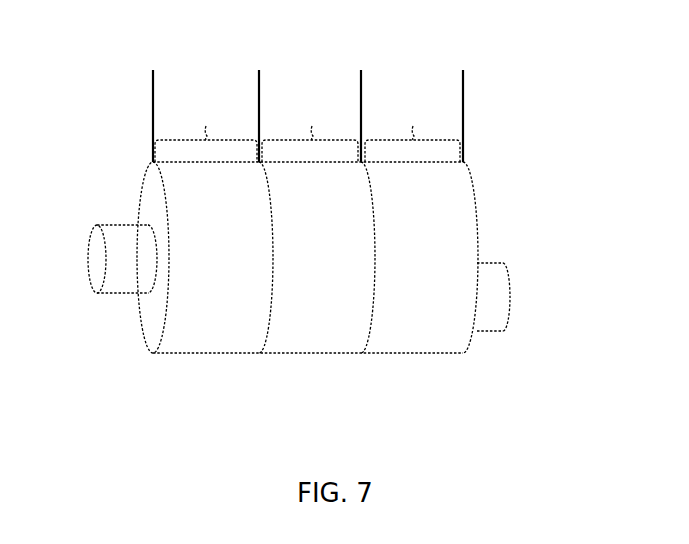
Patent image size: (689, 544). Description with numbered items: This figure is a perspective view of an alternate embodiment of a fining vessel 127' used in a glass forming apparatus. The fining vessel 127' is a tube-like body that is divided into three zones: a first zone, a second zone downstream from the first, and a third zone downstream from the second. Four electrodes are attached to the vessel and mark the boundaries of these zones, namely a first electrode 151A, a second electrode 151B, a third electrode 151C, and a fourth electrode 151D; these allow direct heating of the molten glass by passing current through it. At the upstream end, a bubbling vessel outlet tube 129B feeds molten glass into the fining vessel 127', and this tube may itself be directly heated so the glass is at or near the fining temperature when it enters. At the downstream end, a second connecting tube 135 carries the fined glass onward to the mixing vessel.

The fining vessel 127' is at (307, 265).
The bubbling vessel outlet tube 129B is at (123, 294).
The second connecting tube 135 is at (492, 332).
The first electrode 151A is at (153, 89).
The second electrode 151B is at (259, 89).
The third electrode 151C is at (361, 89).
The fourth electrode 151D is at (463, 89).